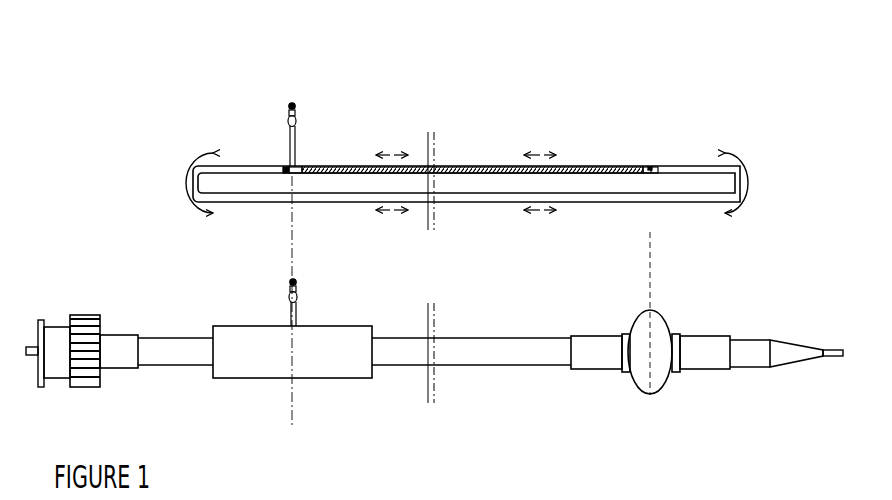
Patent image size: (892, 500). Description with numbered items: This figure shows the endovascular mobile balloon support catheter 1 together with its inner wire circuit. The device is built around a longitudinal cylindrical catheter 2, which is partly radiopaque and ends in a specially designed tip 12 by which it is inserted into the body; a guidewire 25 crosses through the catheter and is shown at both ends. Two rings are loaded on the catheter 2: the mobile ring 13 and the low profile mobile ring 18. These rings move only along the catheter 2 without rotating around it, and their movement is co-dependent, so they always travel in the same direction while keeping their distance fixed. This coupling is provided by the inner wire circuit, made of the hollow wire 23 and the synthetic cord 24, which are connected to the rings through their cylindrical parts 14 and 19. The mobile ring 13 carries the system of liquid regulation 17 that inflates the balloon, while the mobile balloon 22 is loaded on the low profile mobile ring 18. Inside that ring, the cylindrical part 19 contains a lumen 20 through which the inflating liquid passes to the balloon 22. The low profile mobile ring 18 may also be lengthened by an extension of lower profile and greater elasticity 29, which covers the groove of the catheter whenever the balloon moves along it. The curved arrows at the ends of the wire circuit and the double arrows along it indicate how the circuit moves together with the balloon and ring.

The endovascular mobile balloon support catheter 1 is at (37, 385).
The longitudinal cylindrical catheter 2 is at (153, 345).
The specially designed tip 12 is at (778, 345).
The mobile ring 13 is at (220, 345).
The cylindrical part 14 is at (288, 166).
The system of liquid regulation 17 is at (296, 142).
The low profile mobile ring 18 is at (626, 345).
The cylindrical part 19 is at (644, 167).
The lumen 20 is at (651, 222).
The mobile balloon 22 is at (664, 345).
The hollow wire 23 is at (353, 167).
The synthetic cord 24 is at (218, 173).
The guidewire 25 is at (37, 320).
The extension with lower profile and greater elasticity 29 is at (585, 345).